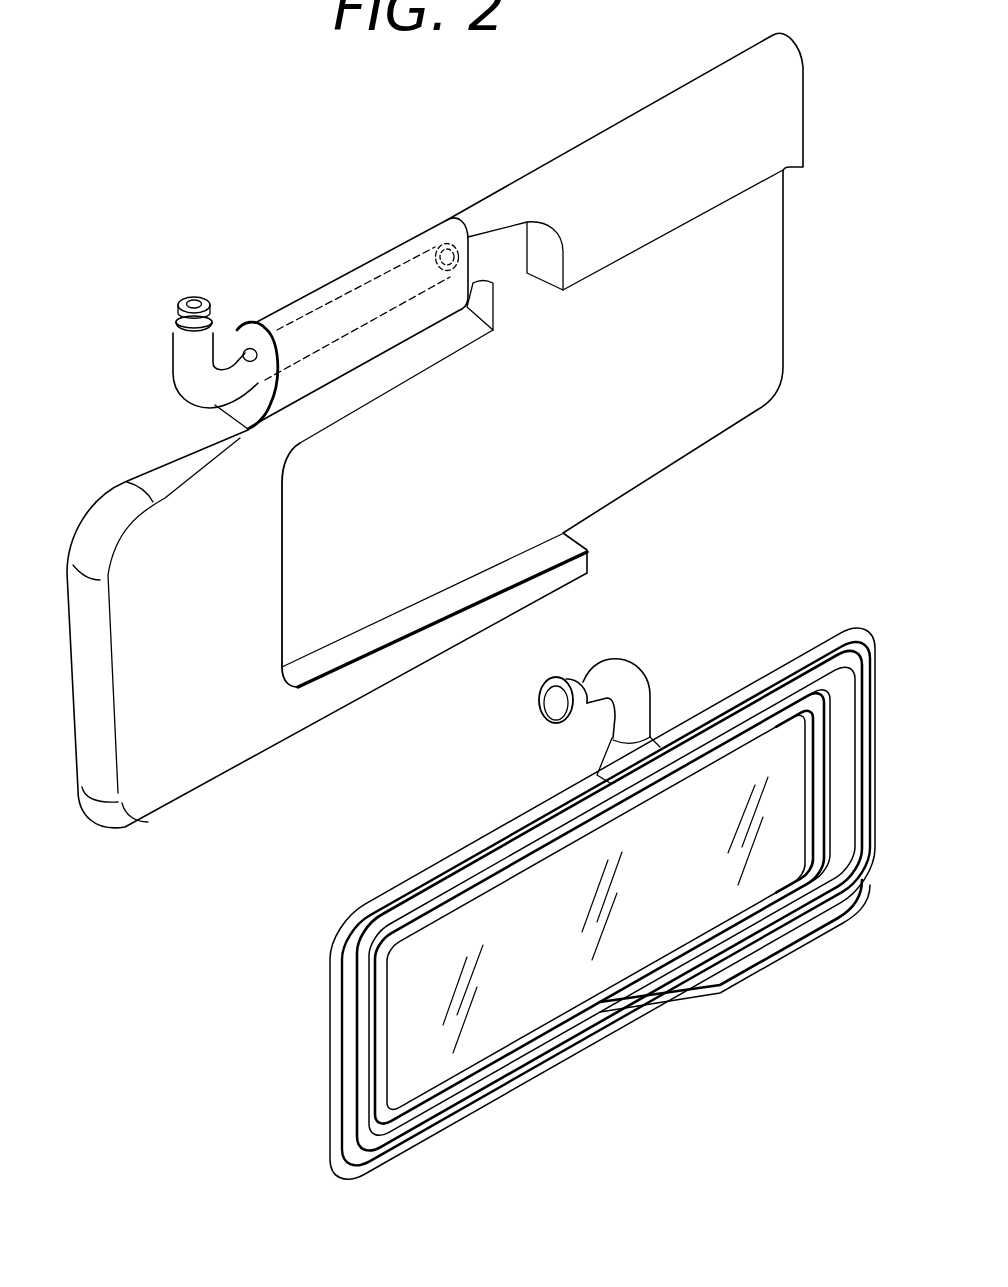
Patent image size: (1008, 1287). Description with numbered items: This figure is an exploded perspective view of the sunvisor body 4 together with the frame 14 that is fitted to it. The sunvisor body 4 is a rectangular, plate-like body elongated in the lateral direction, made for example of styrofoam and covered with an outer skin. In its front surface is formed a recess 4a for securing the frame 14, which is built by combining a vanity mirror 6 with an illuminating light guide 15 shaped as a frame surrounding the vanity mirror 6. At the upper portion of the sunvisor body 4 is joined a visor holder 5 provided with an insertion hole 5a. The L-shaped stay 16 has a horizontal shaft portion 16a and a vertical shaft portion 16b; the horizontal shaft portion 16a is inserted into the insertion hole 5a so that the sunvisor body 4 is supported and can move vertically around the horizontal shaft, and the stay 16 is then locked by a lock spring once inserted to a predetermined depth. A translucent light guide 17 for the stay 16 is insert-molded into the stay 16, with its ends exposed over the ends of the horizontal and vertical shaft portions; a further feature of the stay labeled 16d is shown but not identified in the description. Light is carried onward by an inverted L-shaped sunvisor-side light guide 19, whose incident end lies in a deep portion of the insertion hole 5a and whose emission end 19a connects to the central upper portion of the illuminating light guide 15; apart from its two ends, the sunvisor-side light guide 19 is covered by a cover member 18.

The sunvisor body 4 is at (178, 772).
The recess 4a is at (352, 600).
The visor holder 5 is at (340, 280).
The insertion hole 5a is at (238, 330).
The vanity mirror 6 is at (585, 975).
The frame 14 is at (363, 1172).
The illuminating light guide 15 is at (820, 845).
The stay 16 is at (190, 388).
The horizontal shaft portion 16a is at (410, 273).
The vertical shaft portion 16b is at (176, 357).
The flange of bracket 16d is at (176, 326).
The light guide for the stay 17 is at (195, 297).
The cover member 18 is at (640, 695).
The sunvisor-side light guide 19 is at (541, 700).
The emission end 19a is at (556, 710).